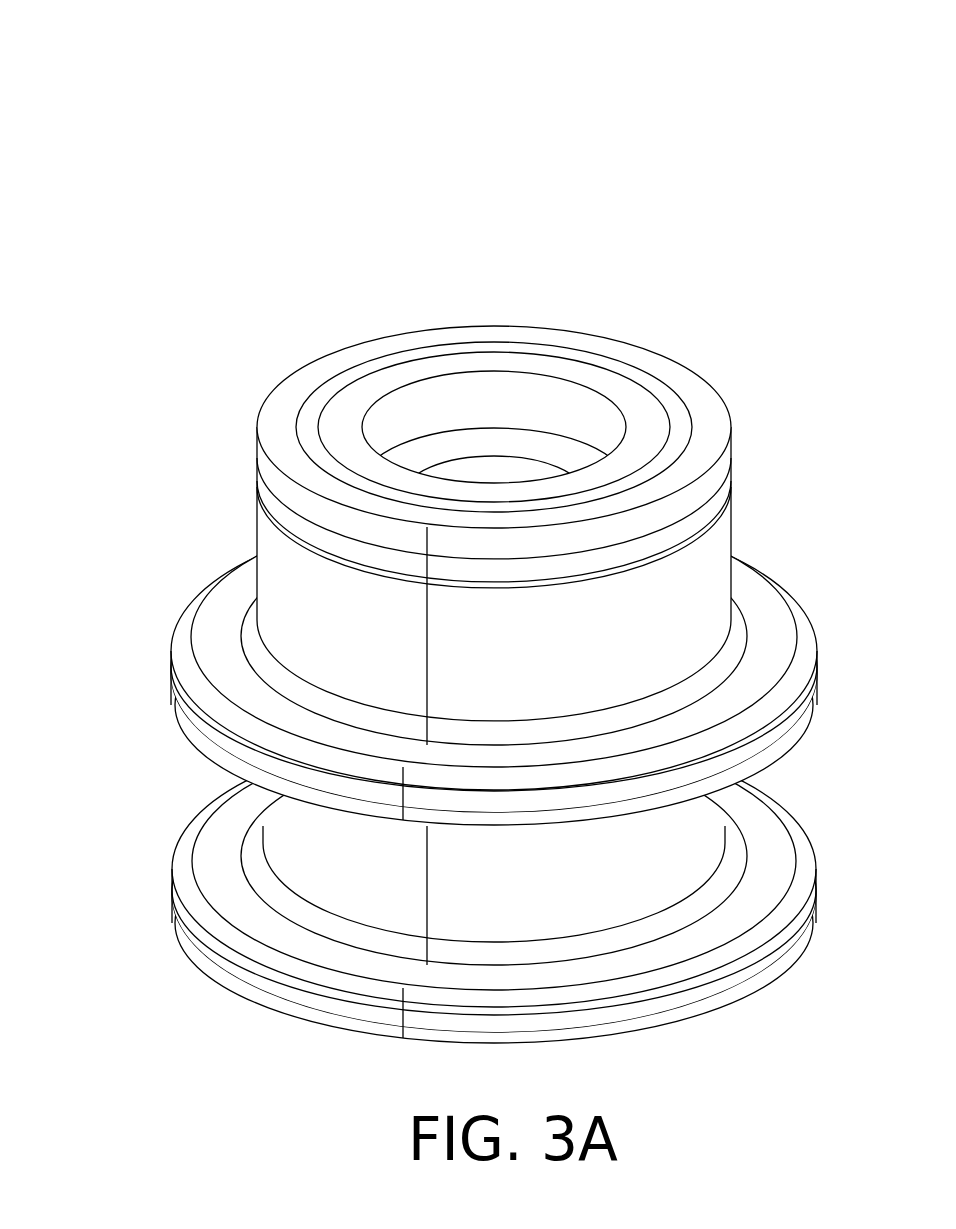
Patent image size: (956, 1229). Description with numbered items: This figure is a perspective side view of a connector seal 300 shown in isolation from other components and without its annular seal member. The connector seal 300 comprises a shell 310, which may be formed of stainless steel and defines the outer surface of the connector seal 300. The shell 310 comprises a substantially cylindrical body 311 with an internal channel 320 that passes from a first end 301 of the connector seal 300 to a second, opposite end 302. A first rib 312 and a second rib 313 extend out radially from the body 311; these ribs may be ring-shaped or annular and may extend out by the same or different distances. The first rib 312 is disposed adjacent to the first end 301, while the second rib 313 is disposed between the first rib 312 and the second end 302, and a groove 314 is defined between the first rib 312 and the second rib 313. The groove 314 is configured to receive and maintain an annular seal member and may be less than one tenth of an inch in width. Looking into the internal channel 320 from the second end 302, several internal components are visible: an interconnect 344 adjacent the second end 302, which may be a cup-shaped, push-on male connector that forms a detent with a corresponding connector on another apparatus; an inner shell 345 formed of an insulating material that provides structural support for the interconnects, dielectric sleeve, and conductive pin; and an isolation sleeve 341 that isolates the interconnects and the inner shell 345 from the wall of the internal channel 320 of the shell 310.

The connector seal 300 is at (438, 543).
The first end 301 is at (308, 1027).
The second end 302 is at (322, 343).
The shell 310 is at (250, 537).
The body 311 is at (712, 567).
The first rib 312 is at (232, 903).
The second rib 313 is at (205, 640).
The groove 314 is at (200, 775).
The internal channel 320 is at (535, 403).
The isolation sleeve 341 is at (357, 368).
The interconnect 344 is at (428, 410).
The inner shell 345 is at (648, 425).